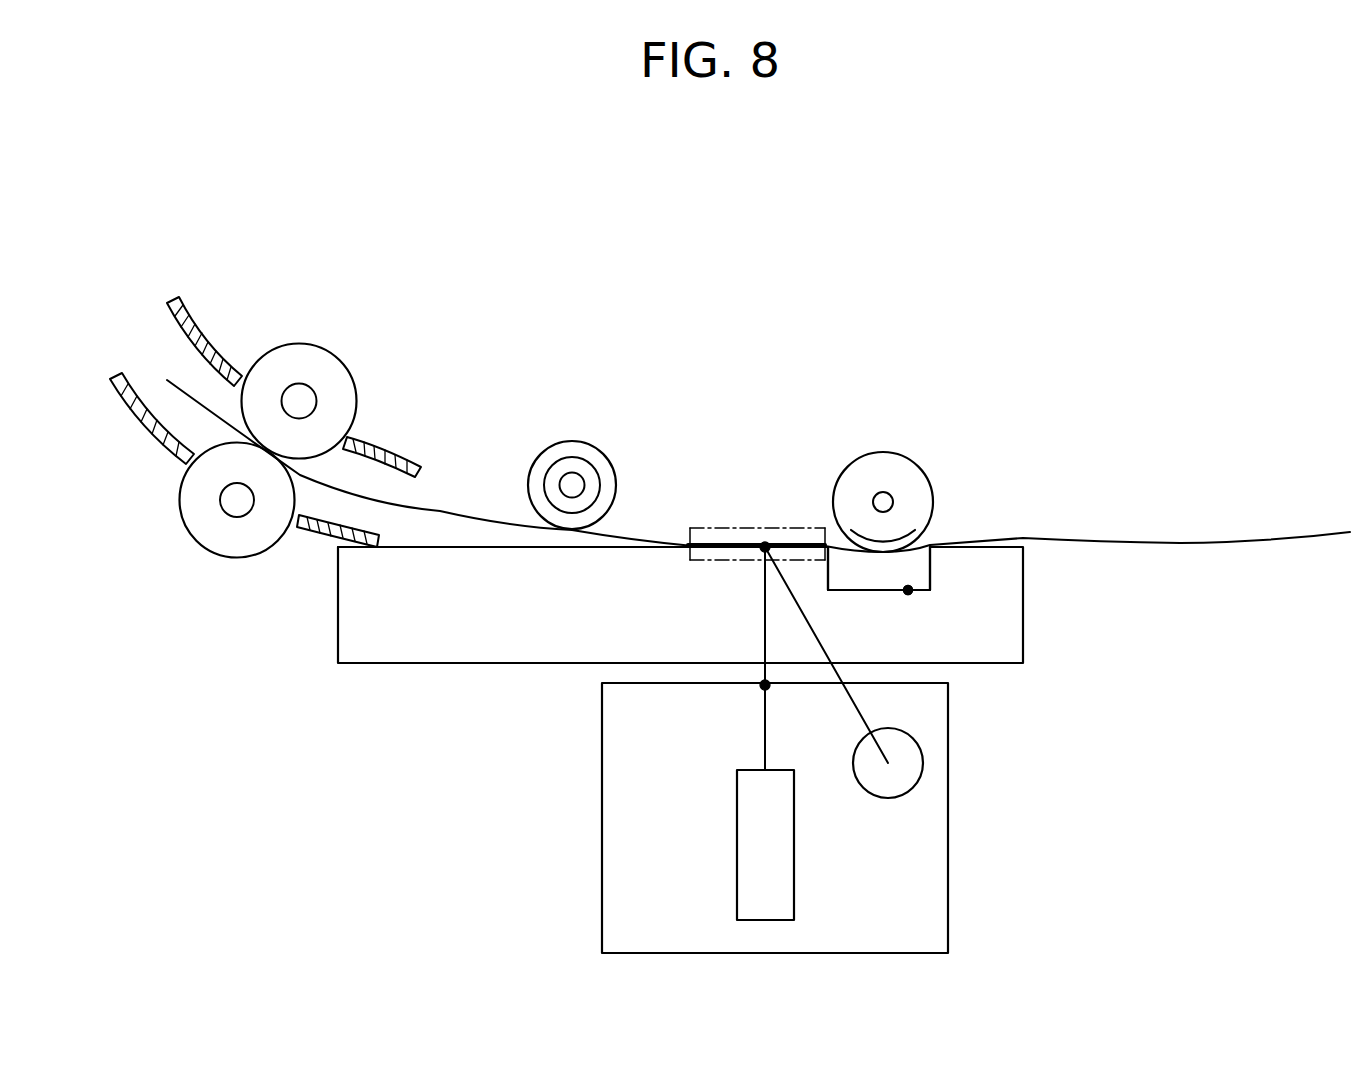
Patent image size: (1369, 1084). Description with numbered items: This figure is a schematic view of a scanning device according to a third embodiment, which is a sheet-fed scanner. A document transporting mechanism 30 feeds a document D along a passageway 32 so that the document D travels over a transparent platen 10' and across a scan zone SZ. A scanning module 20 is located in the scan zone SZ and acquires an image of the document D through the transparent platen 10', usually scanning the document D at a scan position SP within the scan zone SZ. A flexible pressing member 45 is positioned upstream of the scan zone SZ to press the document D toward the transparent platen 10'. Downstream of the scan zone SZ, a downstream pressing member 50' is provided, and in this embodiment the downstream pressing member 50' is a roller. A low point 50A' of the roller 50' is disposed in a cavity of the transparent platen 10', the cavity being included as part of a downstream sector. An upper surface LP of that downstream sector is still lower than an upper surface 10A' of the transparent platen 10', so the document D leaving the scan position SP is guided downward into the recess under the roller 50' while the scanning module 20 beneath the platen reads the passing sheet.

The document transporting mechanism 30 is at (323, 373).
The passageway 32 is at (183, 418).
The document D is at (452, 508).
The transparent platen 10' is at (680, 673).
The upper surface of the transparent platen 10A' is at (514, 411).
The upper surface of the downstream sector LP is at (913, 593).
The flexible pressing member 45 is at (585, 441).
The scan zone SZ is at (698, 560).
The scan position SP is at (765, 547).
The downstream pressing member 50' is at (884, 447).
The low point of the roller 50A' is at (880, 580).
The scanning module 20 is at (603, 823).